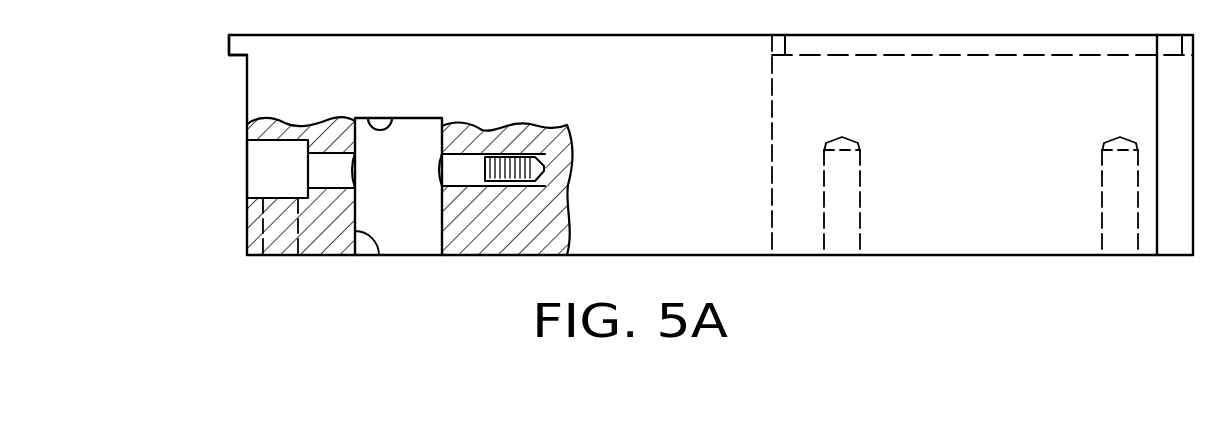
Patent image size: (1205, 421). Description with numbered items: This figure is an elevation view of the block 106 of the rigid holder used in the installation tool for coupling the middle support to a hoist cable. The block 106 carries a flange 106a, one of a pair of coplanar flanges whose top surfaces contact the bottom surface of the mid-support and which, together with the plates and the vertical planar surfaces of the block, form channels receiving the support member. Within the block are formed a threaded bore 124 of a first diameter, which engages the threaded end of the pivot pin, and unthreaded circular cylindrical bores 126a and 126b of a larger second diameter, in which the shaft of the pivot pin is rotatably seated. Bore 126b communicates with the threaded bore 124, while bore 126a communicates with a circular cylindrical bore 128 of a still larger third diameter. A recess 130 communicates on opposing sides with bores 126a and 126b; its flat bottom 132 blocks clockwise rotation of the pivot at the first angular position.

The block 106 is at (925, 264).
The flange 106a is at (238, 43).
The threaded bore 124 is at (530, 176).
The unthreaded circular cylindrical bore 126a is at (458, 186).
The unthreaded circular cylindrical bore 126b is at (308, 170).
The circular cylindrical bore 128 is at (255, 157).
The recess 130 is at (380, 255).
The flat bottom 132 is at (390, 118).